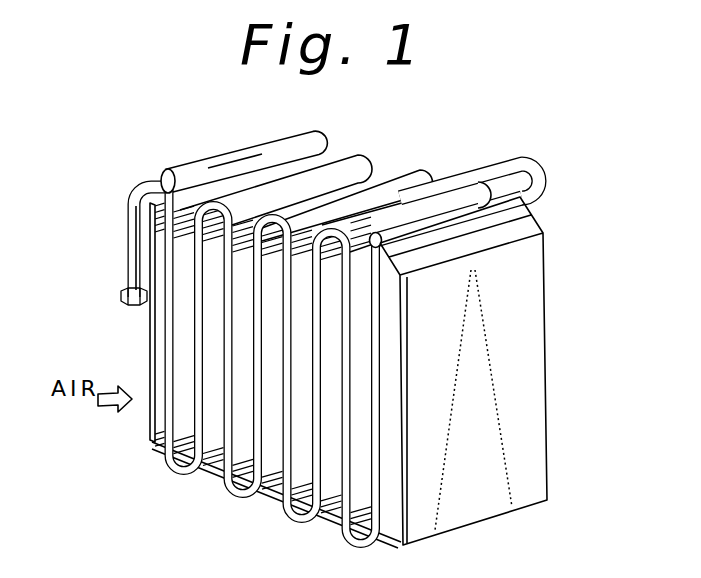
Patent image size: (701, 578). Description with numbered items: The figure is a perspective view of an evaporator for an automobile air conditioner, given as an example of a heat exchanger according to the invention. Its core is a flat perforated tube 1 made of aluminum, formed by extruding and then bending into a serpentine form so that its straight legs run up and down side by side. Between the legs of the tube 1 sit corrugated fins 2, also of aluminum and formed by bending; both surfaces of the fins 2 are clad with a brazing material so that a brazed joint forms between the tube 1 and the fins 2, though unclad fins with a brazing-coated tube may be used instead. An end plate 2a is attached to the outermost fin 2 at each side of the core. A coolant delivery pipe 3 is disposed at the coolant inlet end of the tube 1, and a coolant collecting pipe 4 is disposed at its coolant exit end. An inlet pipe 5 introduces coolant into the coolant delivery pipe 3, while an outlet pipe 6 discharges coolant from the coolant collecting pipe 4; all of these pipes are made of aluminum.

The flat perforated tube 1 is at (186, 478).
The corrugated fins 2 is at (214, 472).
The end plate 2a is at (528, 291).
The coolant delivery pipe 3 is at (543, 207).
The coolant collecting pipe 4 is at (206, 161).
The inlet pipe 5 is at (538, 165).
The outlet pipe 6 is at (127, 247).